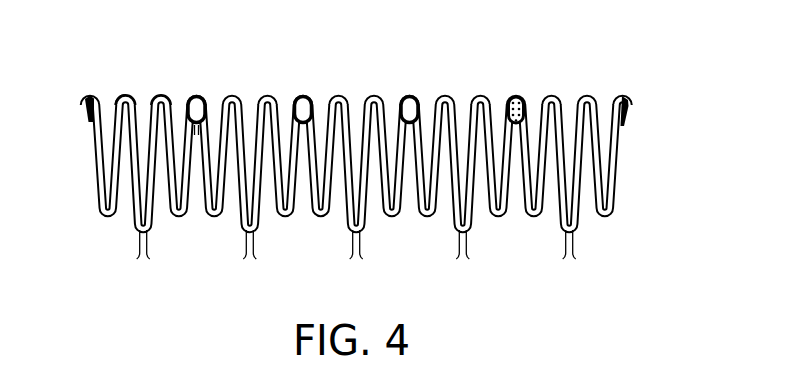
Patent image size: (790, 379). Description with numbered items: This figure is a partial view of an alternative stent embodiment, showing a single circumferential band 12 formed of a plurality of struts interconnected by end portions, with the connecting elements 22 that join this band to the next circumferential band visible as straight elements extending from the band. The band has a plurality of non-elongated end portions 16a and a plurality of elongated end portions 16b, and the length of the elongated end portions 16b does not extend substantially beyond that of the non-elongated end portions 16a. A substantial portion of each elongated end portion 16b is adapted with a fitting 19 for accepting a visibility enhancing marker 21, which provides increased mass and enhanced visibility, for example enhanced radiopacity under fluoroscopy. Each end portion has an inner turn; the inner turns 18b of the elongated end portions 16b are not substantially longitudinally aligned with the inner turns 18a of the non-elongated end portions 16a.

The circumferential band 12 is at (657, 78).
The non-elongated end portion 16a is at (165, 93).
The elongated end portion 16b is at (199, 92).
The inner turn of non-elongated end portion 18a is at (121, 100).
The inner turn of elongated end portion 18b is at (197, 130).
The fitting 19 is at (418, 97).
The visibility enhancing marker 21 is at (527, 91).
The connecting element 22 is at (361, 244).